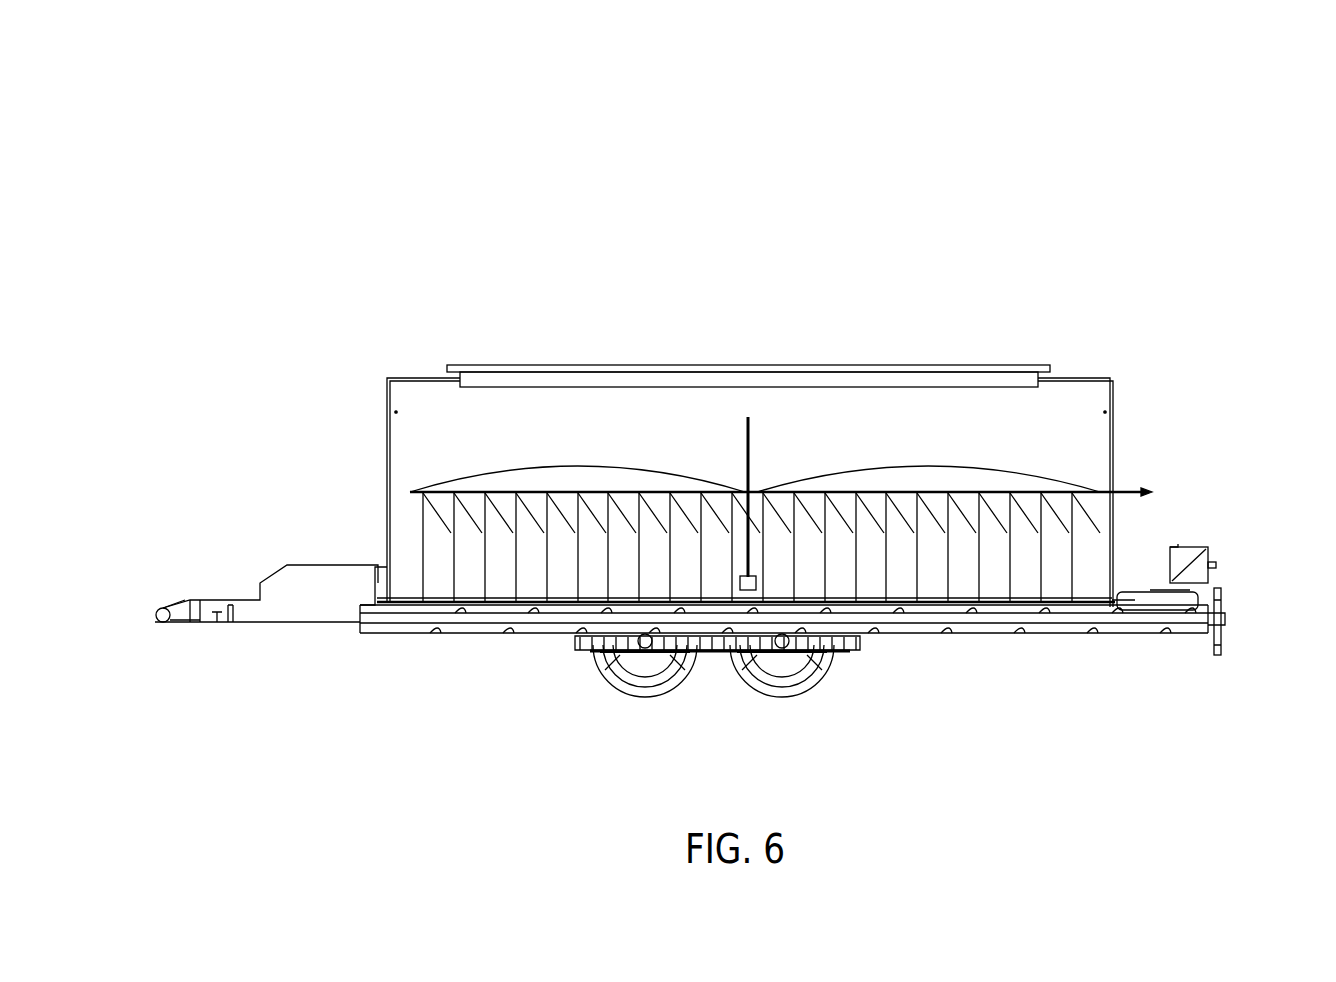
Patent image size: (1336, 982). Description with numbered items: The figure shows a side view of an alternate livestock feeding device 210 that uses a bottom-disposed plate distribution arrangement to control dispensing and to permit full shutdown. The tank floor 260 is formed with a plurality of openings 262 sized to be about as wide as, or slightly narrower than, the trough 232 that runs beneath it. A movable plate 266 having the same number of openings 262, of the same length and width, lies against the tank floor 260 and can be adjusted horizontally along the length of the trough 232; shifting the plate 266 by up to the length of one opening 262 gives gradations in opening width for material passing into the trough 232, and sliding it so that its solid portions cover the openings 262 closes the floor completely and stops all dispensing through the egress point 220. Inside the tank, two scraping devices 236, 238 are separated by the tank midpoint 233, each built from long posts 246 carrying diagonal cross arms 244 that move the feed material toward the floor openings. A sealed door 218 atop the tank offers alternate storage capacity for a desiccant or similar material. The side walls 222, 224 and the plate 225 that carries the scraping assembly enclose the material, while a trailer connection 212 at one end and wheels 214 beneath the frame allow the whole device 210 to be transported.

The alternate device 210 is at (490, 235).
The trailer connection 212 is at (166, 611).
The wheels 214 is at (613, 672).
The sealed door 218 is at (457, 365).
The egress point 220 is at (1197, 585).
The left side wall 222 is at (383, 410).
The right side wall 224 is at (1115, 387).
The support plate 225 is at (415, 490).
The trough 232 is at (478, 630).
The midpoint 233 is at (752, 405).
The scraping device 236 is at (583, 467).
The scraping device 238 is at (927, 467).
The diagonal cross arms 244 is at (436, 521).
The long posts 246 is at (421, 509).
The tank floor 260 is at (1105, 595).
The openings 262 is at (458, 605).
The movable plate 266 is at (398, 608).